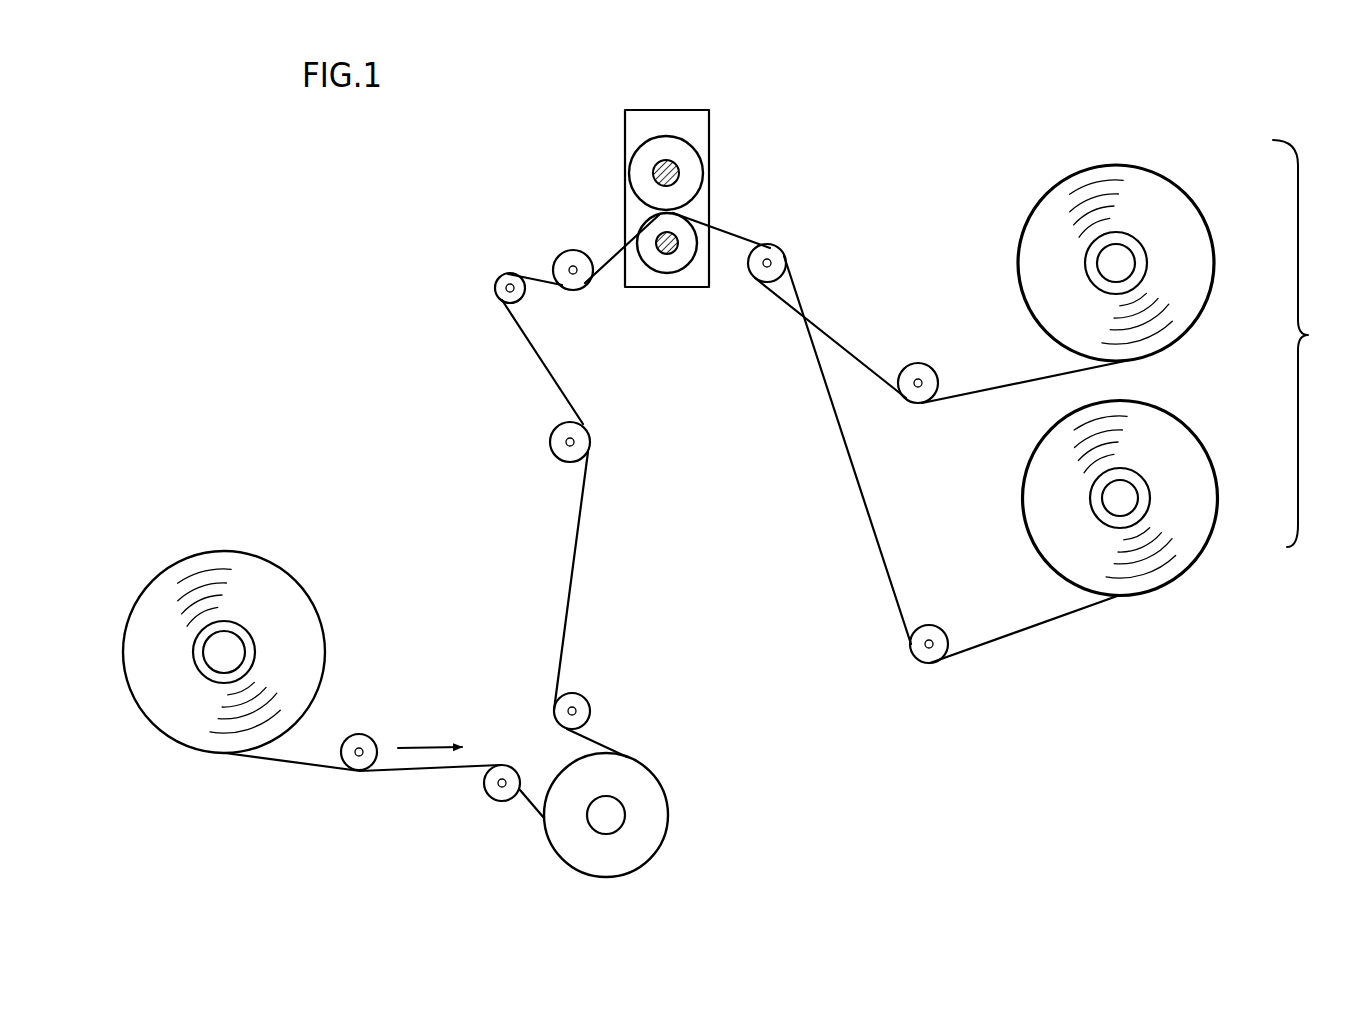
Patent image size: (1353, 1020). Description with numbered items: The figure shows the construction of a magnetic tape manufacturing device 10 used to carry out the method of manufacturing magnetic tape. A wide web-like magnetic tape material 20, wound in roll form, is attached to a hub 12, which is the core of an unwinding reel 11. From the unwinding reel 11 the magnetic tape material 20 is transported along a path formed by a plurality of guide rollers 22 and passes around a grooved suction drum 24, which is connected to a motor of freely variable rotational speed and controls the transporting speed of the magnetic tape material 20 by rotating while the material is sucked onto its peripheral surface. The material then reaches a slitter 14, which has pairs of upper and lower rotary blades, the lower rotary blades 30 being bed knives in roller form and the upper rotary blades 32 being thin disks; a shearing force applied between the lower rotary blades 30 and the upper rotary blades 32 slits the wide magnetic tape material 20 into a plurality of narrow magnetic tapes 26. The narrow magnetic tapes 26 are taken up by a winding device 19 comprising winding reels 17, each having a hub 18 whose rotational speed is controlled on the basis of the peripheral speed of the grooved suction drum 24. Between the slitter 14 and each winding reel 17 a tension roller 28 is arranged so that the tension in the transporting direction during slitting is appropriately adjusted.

The magnetic tape manufacturing device 10 is at (843, 170).
The unwinding reel 11 is at (266, 544).
The hub 12 is at (253, 648).
The slitter 14 is at (718, 170).
The winding reel 17 is at (1172, 174).
The hub 18 is at (1140, 263).
The winding device 19 is at (1309, 343).
The magnetic tape material 20 is at (302, 760).
The guide rollers 22 is at (375, 742).
The grooved suction drum 24 is at (643, 807).
The magnetic tapes 26 is at (1003, 392).
The tension roller 28 is at (920, 406).
The lower rotary blades 30 is at (672, 272).
The upper rotary blades 32 is at (665, 138).